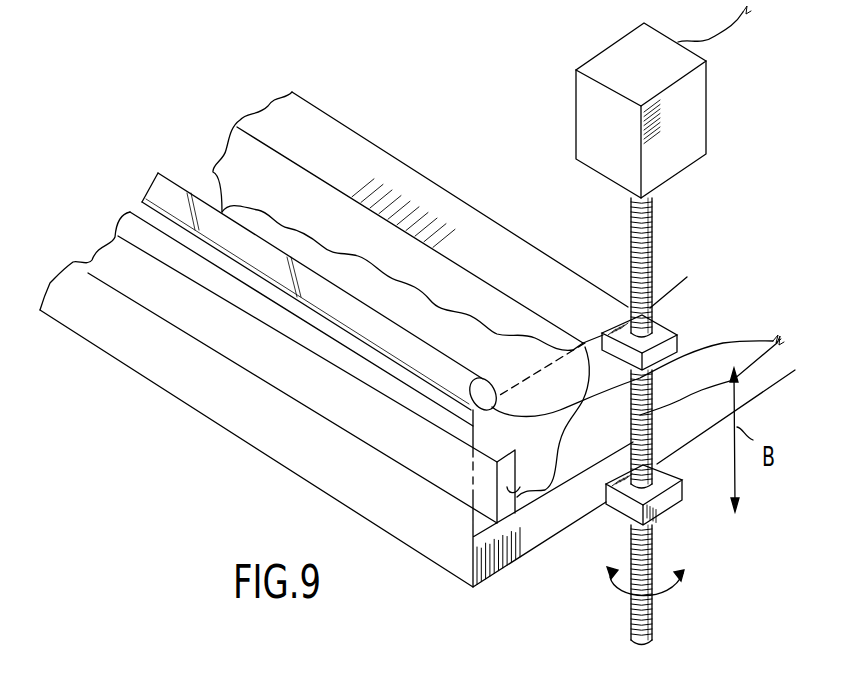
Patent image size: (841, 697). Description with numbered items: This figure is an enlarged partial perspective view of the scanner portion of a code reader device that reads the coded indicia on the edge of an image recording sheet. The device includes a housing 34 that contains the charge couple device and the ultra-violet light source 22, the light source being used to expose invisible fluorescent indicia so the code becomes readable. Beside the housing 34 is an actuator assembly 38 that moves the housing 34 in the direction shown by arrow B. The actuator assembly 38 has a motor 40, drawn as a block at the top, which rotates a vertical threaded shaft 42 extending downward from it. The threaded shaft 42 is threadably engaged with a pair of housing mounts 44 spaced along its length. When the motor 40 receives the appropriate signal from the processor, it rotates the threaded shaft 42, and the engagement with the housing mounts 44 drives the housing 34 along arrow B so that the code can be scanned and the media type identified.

The ultra-violet light source 22 is at (177, 198).
The housing 34 is at (447, 210).
The actuator assembly 38 is at (611, 325).
The motor 40 is at (607, 62).
The threaded shaft 42 is at (652, 265).
The housing mounts 44 is at (680, 333).